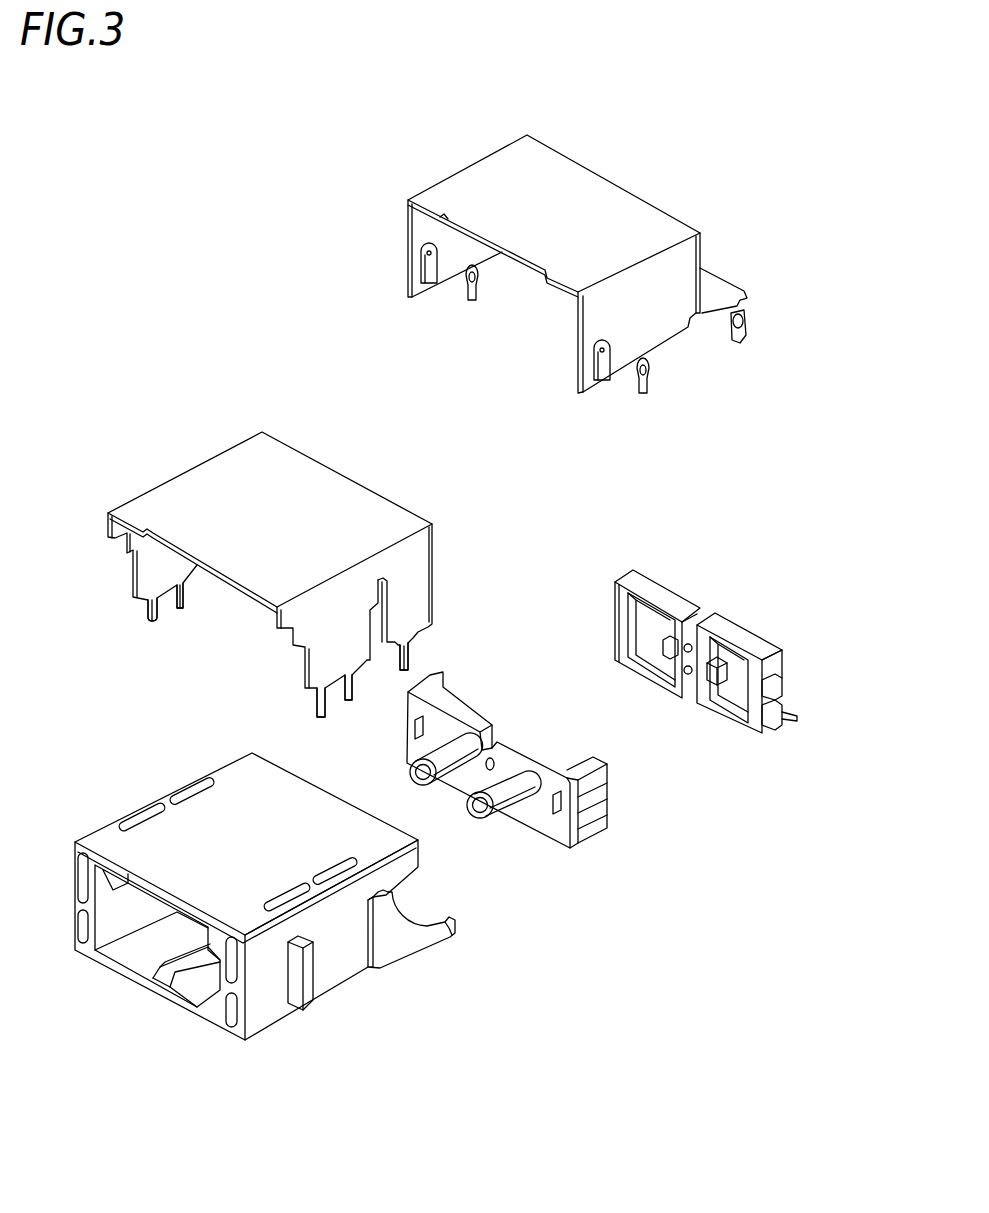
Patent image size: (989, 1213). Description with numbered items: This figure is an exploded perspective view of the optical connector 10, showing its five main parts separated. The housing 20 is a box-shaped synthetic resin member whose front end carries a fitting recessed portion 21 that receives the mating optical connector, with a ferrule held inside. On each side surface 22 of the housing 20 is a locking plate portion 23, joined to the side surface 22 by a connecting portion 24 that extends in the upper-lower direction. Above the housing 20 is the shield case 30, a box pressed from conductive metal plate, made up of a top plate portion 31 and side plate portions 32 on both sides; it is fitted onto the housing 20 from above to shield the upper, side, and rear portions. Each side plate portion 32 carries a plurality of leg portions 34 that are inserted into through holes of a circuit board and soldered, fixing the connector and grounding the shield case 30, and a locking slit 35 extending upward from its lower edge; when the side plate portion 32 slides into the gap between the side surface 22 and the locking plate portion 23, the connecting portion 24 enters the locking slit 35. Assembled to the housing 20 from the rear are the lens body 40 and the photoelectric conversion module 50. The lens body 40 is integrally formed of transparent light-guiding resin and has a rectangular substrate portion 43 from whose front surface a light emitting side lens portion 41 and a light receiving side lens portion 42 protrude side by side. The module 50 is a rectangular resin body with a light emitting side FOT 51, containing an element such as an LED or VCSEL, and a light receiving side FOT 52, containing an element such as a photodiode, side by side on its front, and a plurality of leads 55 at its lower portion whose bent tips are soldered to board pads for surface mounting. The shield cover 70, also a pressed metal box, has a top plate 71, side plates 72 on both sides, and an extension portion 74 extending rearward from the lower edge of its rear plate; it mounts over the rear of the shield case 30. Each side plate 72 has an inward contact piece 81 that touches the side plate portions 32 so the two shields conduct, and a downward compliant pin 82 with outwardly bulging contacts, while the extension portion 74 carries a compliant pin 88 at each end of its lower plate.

The optical connector 10 is at (200, 323).
The housing 20 is at (148, 802).
The fitting recessed portion 21 is at (150, 940).
The side surface 22 is at (330, 965).
The locking plate portion 23 is at (412, 945).
The connecting portion 24 is at (381, 892).
The shield case 30 is at (179, 471).
The top plate portion 31 is at (284, 497).
The side plate portion 32 is at (133, 560).
The leg portion 34 is at (181, 609).
The locking slit 35 is at (388, 617).
The lens body 40 is at (568, 845).
The light emitting side lens portion 41 is at (438, 782).
The light receiving side lens portion 42 is at (498, 812).
The substrate portion 43 is at (478, 723).
The photoelectric conversion module (FOT) 50 is at (771, 744).
The light emitting side FOT 51 is at (665, 640).
The light receiving side FOT 52 is at (718, 670).
The lead 55 is at (795, 698).
The shield cover 70 is at (479, 153).
The top plate 71 is at (557, 204).
The side plate 72 is at (416, 225).
The extension portion 74 is at (710, 284).
The contact piece 81 is at (412, 300).
The compliant pin 82 is at (470, 303).
The compliant pin 88 is at (746, 328).